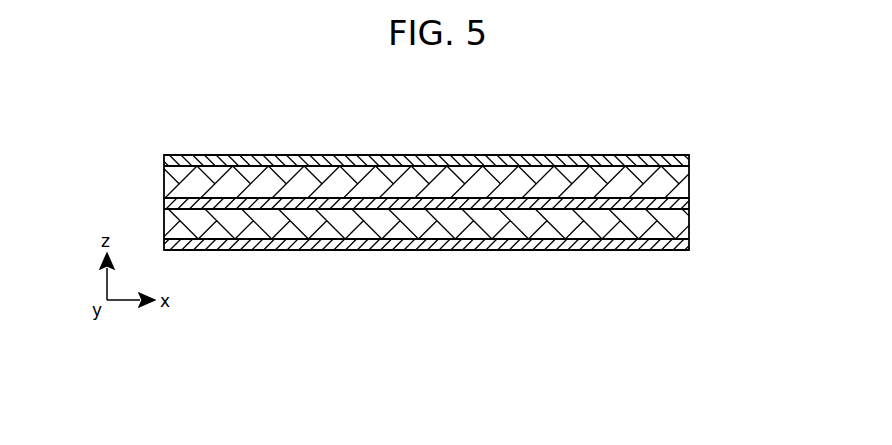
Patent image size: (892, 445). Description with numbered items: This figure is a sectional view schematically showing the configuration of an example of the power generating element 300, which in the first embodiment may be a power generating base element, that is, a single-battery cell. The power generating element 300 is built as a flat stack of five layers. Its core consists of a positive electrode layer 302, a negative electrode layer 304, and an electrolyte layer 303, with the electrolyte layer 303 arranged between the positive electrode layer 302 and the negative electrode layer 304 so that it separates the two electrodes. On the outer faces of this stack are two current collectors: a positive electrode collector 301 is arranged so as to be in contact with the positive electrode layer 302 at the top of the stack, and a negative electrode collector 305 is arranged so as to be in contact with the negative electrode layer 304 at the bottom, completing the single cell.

The power generating element 300 is at (485, 87).
The positive electrode collector 301 is at (683, 158).
The positive electrode layer 302 is at (675, 176).
The electrolyte layer 303 is at (683, 204).
The negative electrode layer 304 is at (675, 224).
The negative electrode collector 305 is at (673, 248).